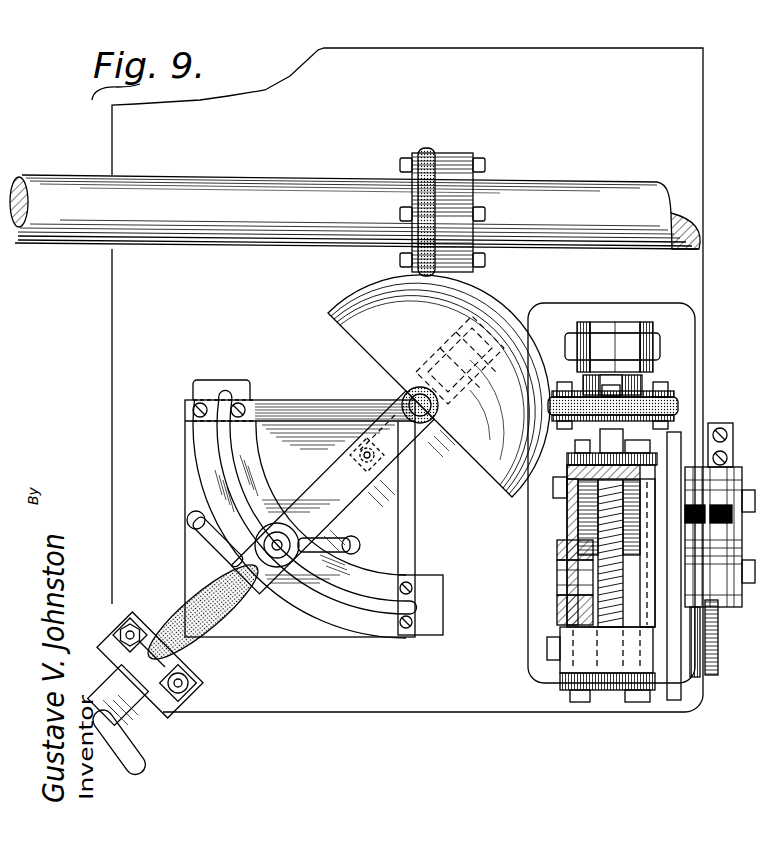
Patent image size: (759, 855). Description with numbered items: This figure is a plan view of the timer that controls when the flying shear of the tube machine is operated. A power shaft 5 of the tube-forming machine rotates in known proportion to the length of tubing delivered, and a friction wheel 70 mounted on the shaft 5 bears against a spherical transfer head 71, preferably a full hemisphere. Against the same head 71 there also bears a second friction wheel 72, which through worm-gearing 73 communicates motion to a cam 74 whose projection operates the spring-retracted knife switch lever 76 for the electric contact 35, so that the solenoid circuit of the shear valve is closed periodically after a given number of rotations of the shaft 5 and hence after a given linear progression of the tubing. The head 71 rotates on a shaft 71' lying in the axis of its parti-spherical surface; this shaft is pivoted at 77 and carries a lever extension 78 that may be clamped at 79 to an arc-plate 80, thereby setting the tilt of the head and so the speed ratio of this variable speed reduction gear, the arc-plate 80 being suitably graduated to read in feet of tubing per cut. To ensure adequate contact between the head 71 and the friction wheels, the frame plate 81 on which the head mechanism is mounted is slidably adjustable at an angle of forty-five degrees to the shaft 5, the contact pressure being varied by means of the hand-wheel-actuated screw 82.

The power shaft 5 is at (84, 188).
The friction wheel 70 is at (428, 153).
The spherical transfer head 71 is at (439, 379).
The shaft of transfer head 71' is at (457, 360).
The friction wheel 72 is at (682, 405).
The electric switch (contact) 35 is at (742, 457).
The worm-gearing 73 is at (590, 613).
The cam 74 is at (718, 672).
The knife switch lever 76 is at (720, 613).
The pivot 77 is at (405, 398).
The lever extension 78 is at (337, 477).
The clamp 79 is at (278, 540).
The arc-plate 80 is at (235, 382).
The frame plate 81 is at (415, 545).
The hand-wheel-actuated screw 82 is at (203, 652).